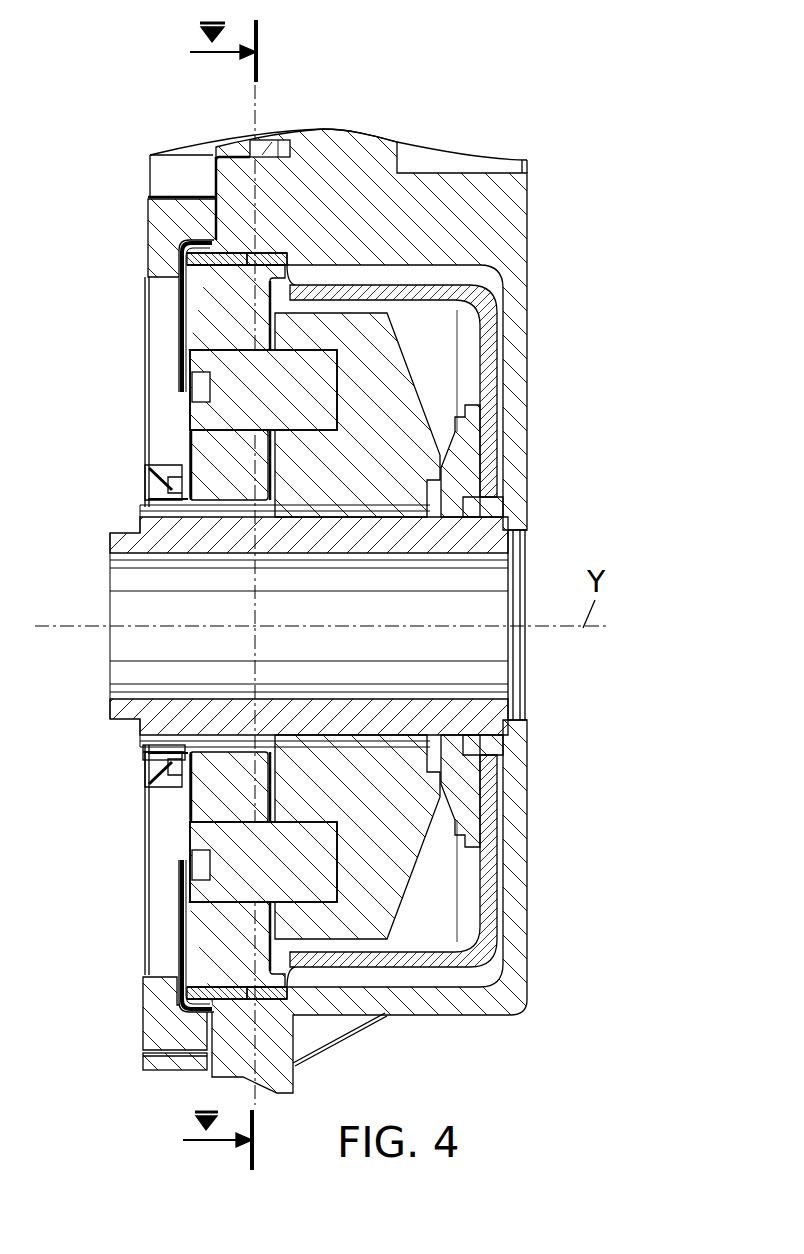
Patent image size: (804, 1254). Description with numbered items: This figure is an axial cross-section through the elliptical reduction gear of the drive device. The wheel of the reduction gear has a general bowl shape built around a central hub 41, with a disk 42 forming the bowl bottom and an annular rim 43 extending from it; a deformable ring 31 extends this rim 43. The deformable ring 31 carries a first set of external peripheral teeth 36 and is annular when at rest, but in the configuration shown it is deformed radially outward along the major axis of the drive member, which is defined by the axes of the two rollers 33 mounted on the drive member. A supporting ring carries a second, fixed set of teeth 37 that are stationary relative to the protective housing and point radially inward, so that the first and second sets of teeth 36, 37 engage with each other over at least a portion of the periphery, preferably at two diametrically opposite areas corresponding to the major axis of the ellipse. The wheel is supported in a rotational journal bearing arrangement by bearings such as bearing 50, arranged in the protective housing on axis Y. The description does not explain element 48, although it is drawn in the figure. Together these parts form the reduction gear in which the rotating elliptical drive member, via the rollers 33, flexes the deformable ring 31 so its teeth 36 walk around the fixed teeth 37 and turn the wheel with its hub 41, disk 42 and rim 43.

The deformable ring 31 is at (187, 271).
The rollers 33 is at (223, 460).
The first set of external peripheral teeth 36 is at (273, 262).
The second set of teeth 37 is at (243, 262).
The central hub 41 is at (493, 547).
The disk 42 is at (490, 362).
The annular rim 43 is at (422, 292).
The magnet 48 is at (250, 388).
The bearing 50 is at (163, 750).